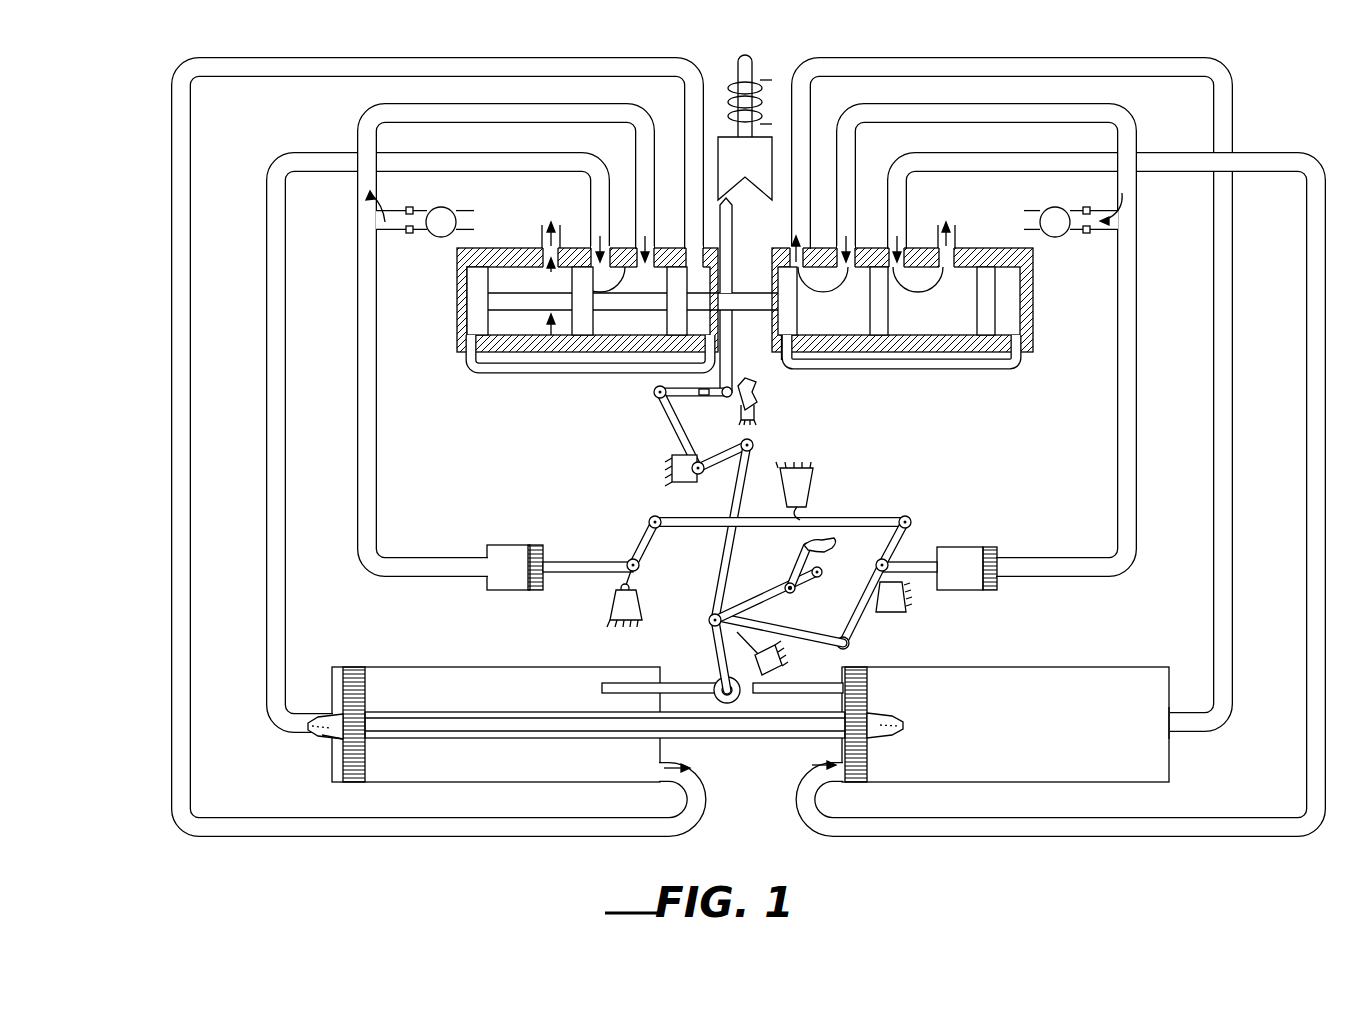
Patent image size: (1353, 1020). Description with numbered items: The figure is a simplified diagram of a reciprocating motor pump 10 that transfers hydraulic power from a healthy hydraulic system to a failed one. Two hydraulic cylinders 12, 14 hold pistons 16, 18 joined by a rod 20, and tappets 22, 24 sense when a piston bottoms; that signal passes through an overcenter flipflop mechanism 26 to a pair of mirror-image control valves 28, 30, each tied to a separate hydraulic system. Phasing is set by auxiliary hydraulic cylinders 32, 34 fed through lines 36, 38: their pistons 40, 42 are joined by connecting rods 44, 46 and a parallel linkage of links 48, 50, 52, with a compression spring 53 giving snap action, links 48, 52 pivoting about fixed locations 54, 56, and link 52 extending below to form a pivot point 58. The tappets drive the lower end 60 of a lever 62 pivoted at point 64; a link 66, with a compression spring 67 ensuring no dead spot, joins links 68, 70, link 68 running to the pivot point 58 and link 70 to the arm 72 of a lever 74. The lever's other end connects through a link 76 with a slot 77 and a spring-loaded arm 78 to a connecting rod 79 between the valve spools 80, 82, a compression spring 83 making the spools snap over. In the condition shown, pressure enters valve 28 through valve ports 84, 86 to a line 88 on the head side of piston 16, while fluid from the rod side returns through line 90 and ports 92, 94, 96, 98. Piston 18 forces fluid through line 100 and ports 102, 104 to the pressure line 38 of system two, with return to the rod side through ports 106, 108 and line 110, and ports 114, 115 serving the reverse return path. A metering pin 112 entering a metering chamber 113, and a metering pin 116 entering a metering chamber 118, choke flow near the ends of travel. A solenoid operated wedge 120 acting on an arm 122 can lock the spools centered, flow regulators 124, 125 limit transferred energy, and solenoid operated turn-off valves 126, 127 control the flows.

The reciprocating motor pump 10 is at (140, 508).
The hydraulic cylinder 12 is at (530, 667).
The hydraulic cylinder 14 is at (1088, 667).
The piston 16 is at (366, 690).
The piston 18 is at (868, 688).
The rod 20 is at (770, 738).
The tappet 22 is at (685, 684).
The tappet 24 is at (816, 682).
The overcenter flipflop mechanism 26 is at (865, 505).
The control valve 28 is at (457, 330).
The control valve 30 is at (1033, 332).
The auxiliary hydraulic cylinder 32 is at (505, 545).
The auxiliary hydraulic cylinder 34 is at (990, 547).
The line 36 is at (357, 230).
The line 38 is at (1138, 231).
The piston 40 is at (538, 545).
The piston 42 is at (1000, 547).
The connecting rod 44 is at (590, 562).
The connecting rod 46 is at (930, 563).
The link 48 is at (642, 550).
The link 50 is at (708, 518).
The link 52 is at (912, 526).
The compression spring 53 is at (806, 506).
The fixed location 54 is at (612, 598).
The fixed location 56 is at (870, 588).
The pivot point 58 is at (851, 643).
The lower end 60 is at (720, 683).
The lever 62 is at (793, 562).
The point 64 is at (734, 638).
The link 66 is at (770, 590).
The compression spring 67 is at (838, 547).
The link 68 is at (808, 618).
The link 70 is at (726, 570).
The arm 72 is at (734, 450).
The lever 74 is at (666, 428).
The link 76 is at (680, 396).
The slot 77 is at (708, 398).
The arm 78 is at (733, 385).
The connecting rod 79 is at (734, 320).
The valve spool 80 is at (630, 312).
The valve spool 82 is at (934, 312).
The compression spring 83 is at (756, 398).
The valve port 84 is at (652, 252).
The valve port 86 is at (608, 252).
The line 88 is at (486, 176).
The line 90 is at (530, 817).
The valve port 92 is at (700, 245).
The valve port 94 is at (668, 376).
The valve port 96 is at (550, 364).
The valve port 98 is at (541, 236).
The line 100 is at (1213, 577).
The valve port 102 is at (804, 248).
The valve port 104 is at (855, 248).
The valve port 106 is at (956, 248).
The valve port 108 is at (906, 246).
The line 110 is at (1306, 580).
The metering pin 112 is at (905, 728).
The metering chamber 113 is at (1174, 710).
The valve port 114 is at (786, 364).
The valve port 115 is at (938, 368).
The metering pin 116 is at (322, 735).
The metering chamber 118 is at (312, 714).
The solenoid operated wedge 120 is at (745, 127).
The arm 122 is at (732, 208).
The flow regulator 124 is at (409, 233).
The flow regulator 125 is at (1087, 233).
The solenoid operated turn-off valve 126 is at (458, 192).
The solenoid operated turn-off valve 127 is at (1058, 207).